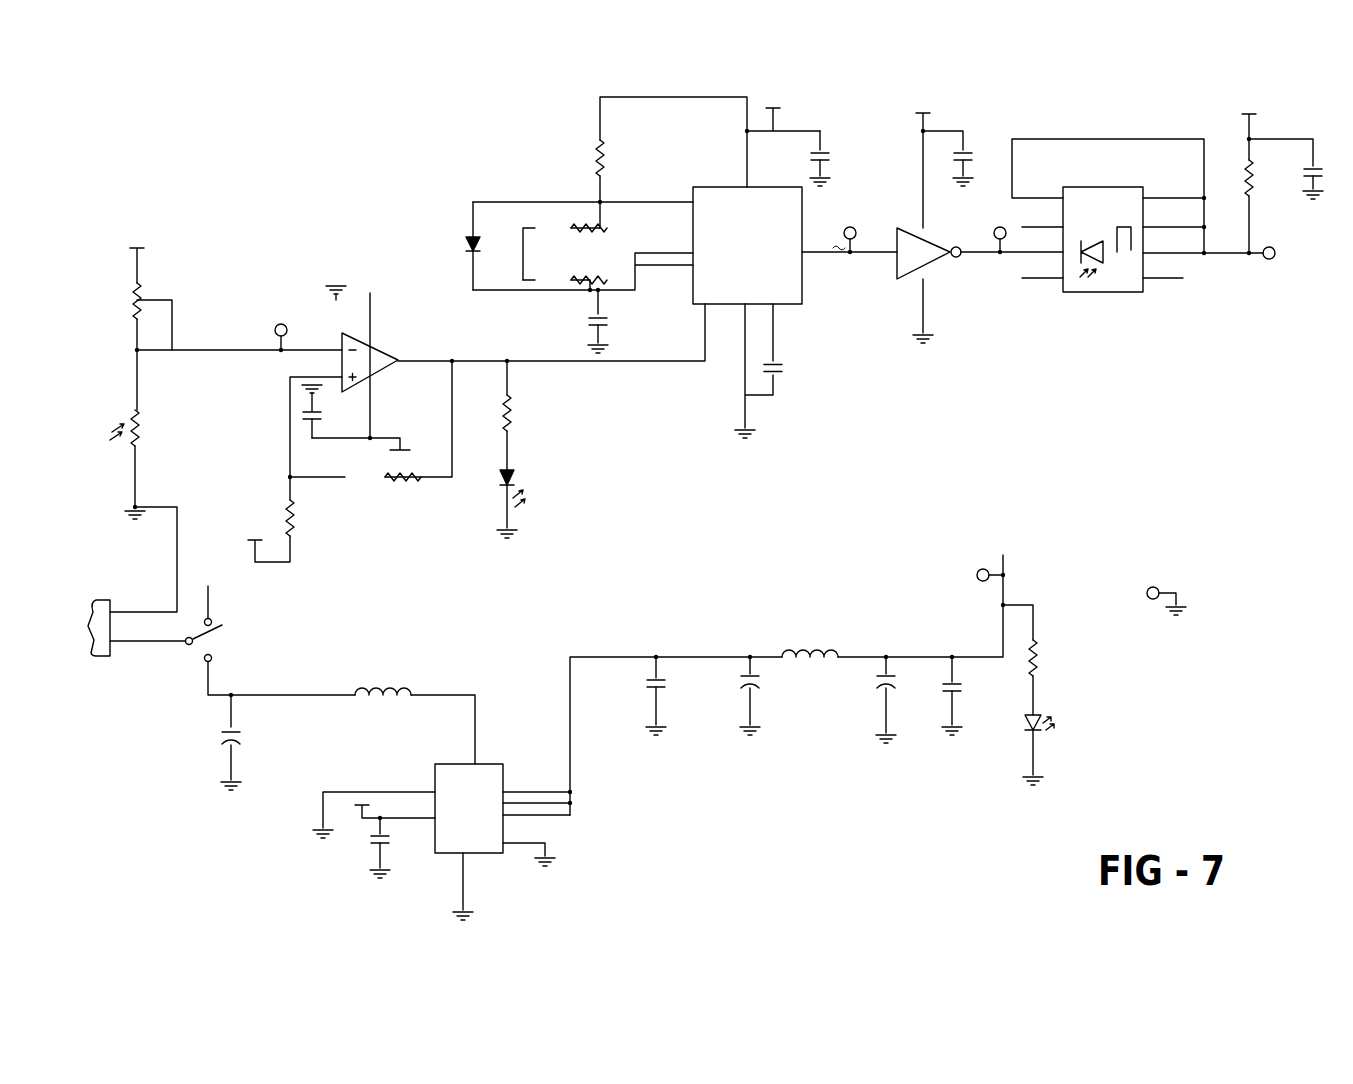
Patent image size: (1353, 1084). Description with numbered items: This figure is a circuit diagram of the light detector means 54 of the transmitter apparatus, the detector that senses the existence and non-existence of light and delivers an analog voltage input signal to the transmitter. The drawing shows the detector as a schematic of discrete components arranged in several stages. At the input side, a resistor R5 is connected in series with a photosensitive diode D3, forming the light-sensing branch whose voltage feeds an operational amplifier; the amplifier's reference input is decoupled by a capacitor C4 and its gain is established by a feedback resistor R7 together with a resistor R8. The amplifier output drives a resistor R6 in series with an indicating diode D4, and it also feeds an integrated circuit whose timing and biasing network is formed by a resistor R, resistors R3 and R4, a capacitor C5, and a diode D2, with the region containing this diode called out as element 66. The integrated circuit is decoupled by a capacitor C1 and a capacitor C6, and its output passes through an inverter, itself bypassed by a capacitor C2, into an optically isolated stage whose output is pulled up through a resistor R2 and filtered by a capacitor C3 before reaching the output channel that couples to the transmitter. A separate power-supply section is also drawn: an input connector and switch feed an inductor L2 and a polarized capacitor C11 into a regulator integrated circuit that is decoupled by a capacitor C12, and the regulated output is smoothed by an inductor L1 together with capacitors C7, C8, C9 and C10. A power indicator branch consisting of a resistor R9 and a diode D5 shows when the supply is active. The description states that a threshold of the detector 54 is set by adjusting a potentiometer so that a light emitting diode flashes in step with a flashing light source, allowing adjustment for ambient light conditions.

The light detector means 54 is at (174, 194).
The light emitting diode 66 is at (434, 226).
The resistor R5 is at (152, 296).
The photodiode D3 is at (121, 428).
The inductor L2 is at (383, 676).
The capacitor C11 is at (250, 741).
The capacitor C4 is at (327, 411).
The resistor R7 is at (370, 429).
The resistor R8 is at (285, 519).
The resistor R6 is at (520, 415).
The light emitting diode D4 is at (522, 498).
The resistor R is at (671, 162).
The resistor R3 is at (565, 245).
The resistor R4 is at (565, 276).
The capacitor C5 is at (614, 321).
The light emitting diode D2 is at (459, 246).
The capacitor C1 is at (836, 158).
The capacitor C6 is at (775, 371).
The capacitor C2 is at (964, 158).
The resistor R2 is at (1261, 183).
The capacitor C3 is at (1296, 169).
The inductor L1 is at (810, 639).
The capacitor C7 is at (672, 696).
The capacitor C8 is at (764, 696).
The capacitor C9 is at (900, 700).
The capacitor C10 is at (970, 696).
The resistor R9 is at (1032, 660).
The light emitting diode D5 is at (1047, 747).
The capacitor C12 is at (395, 847).